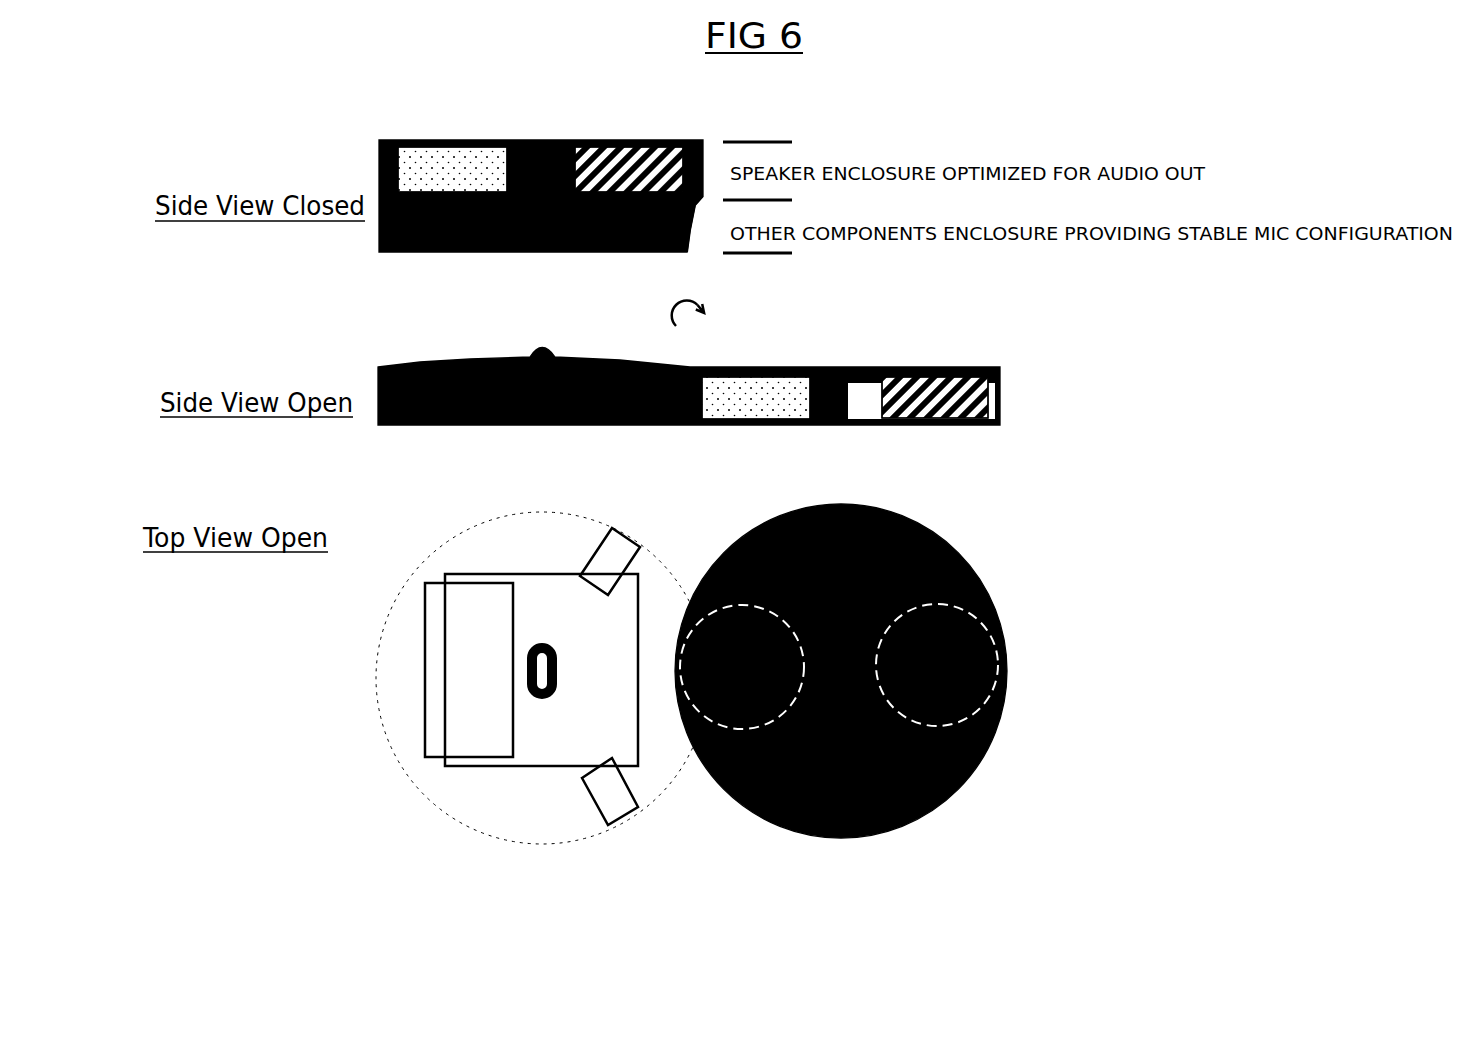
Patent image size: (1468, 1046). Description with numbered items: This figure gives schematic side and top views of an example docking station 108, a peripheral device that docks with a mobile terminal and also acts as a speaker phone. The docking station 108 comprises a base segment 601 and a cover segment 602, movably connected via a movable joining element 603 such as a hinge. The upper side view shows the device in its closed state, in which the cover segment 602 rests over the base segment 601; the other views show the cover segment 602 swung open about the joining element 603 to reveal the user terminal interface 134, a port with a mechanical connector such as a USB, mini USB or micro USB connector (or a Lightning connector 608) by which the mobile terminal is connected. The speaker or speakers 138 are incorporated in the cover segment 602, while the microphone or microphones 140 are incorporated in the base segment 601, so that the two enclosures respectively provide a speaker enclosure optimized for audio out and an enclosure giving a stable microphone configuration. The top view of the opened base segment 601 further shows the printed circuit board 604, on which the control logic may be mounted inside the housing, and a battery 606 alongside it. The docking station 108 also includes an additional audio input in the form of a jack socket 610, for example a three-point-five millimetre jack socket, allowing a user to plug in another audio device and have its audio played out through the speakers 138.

The docking station 108 is at (452, 123).
The base segment 601 is at (687, 253).
The cover segment 602 is at (703, 140).
The movable joining element 603 is at (690, 215).
The microphone 140 is at (388, 598).
The PCB 604 is at (433, 733).
The battery 606 is at (409, 620).
The Lightning connector 608 is at (627, 518).
The jack socket 610 is at (637, 838).
The user terminal interface 134 is at (557, 678).
The speaker 138 is at (944, 441).